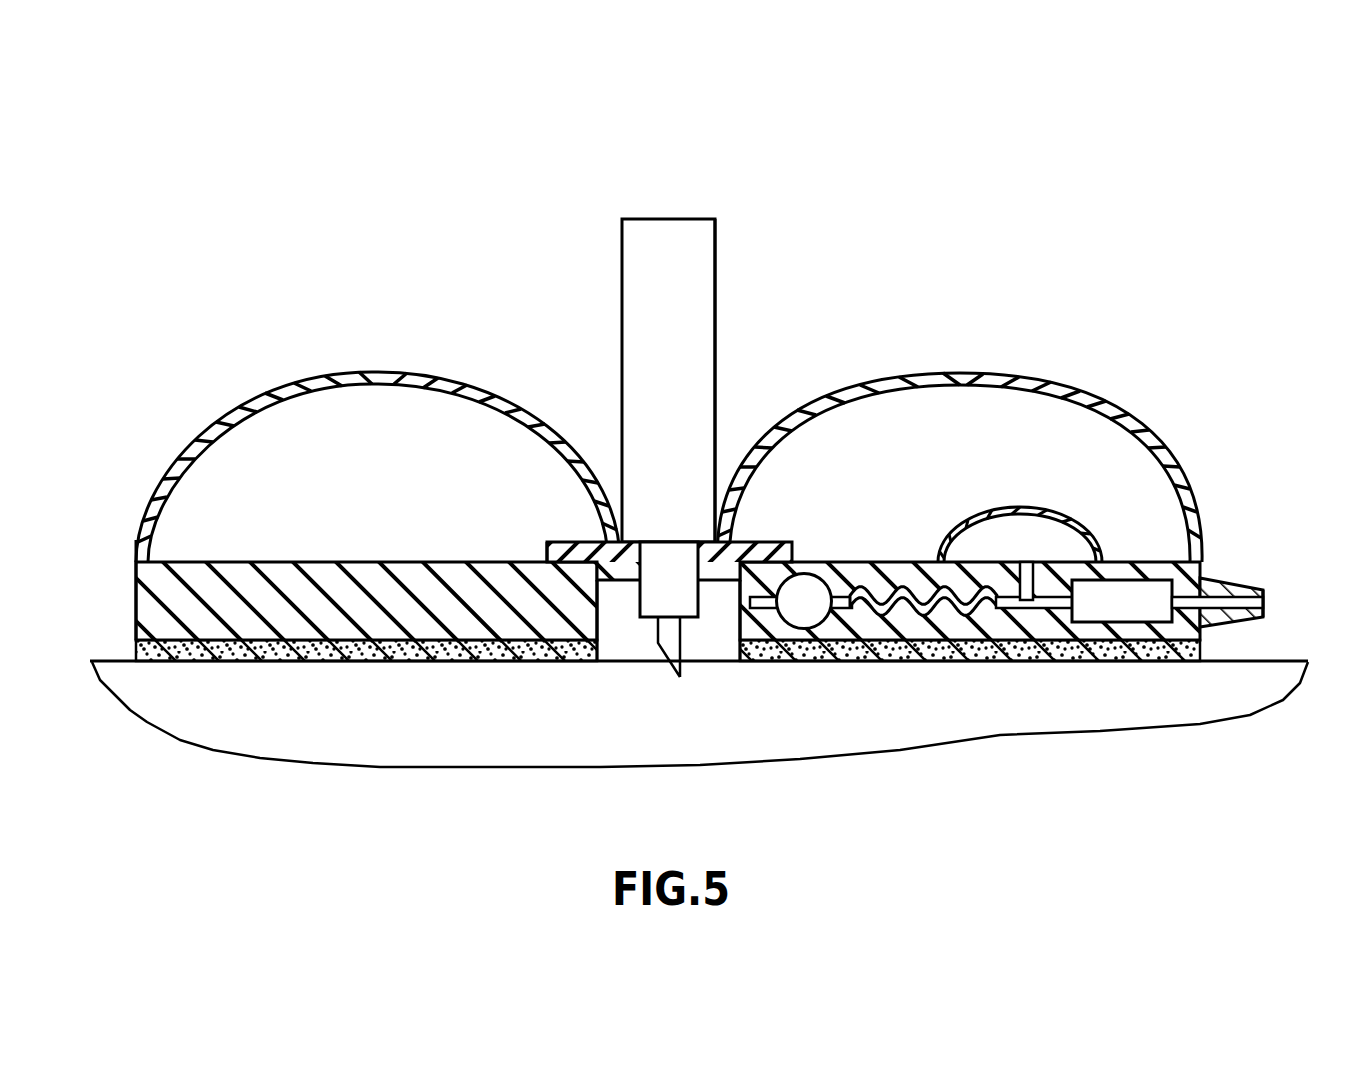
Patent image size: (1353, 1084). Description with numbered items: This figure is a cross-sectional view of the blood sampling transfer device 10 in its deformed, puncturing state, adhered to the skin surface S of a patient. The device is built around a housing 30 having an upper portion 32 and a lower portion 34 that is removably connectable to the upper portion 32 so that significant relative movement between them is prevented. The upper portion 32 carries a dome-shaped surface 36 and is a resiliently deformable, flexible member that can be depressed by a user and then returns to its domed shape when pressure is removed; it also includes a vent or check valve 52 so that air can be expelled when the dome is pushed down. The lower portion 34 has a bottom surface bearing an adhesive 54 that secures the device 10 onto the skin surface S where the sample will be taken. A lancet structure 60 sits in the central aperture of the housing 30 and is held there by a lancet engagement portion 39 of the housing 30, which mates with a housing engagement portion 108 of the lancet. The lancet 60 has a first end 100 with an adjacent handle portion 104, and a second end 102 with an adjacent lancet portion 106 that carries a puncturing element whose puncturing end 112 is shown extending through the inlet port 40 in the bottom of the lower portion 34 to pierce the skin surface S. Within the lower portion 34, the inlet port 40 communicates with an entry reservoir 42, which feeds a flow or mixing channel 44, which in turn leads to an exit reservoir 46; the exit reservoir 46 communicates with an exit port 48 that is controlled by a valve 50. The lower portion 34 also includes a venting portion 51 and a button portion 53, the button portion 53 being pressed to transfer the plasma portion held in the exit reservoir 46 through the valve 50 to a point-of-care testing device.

The blood sampling transfer device 10 is at (995, 187).
The housing 30 is at (136, 563).
The upper portion 32 is at (165, 460).
The lower portion 34 is at (136, 603).
The dome-shaped surface 36 is at (306, 374).
The lancet engagement portion 39 is at (580, 544).
The inlet port 40 is at (609, 673).
The entry reservoir 42 is at (805, 597).
The flow channel 44 is at (868, 594).
The exit reservoir 46 is at (1133, 600).
The exit port 48 is at (1237, 580).
The valve 50 is at (1265, 605).
The venting portion 51 is at (1026, 571).
The check valve 52 is at (1123, 413).
The button portion 53 is at (1062, 520).
The adhesive 54 is at (136, 651).
The lancet structure 60 is at (622, 306).
The first end 100 is at (667, 219).
The second end 102 is at (657, 687).
The handle portion 104 is at (716, 317).
The lancet portion 106 is at (690, 578).
The housing engagement portion 108 is at (630, 538).
The puncturing end 112 is at (680, 650).
The skin surface S is at (262, 727).